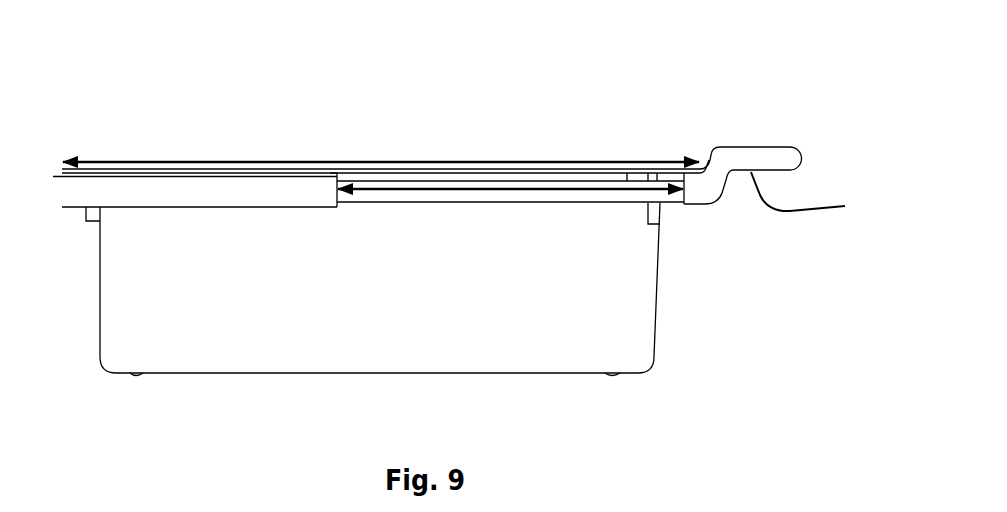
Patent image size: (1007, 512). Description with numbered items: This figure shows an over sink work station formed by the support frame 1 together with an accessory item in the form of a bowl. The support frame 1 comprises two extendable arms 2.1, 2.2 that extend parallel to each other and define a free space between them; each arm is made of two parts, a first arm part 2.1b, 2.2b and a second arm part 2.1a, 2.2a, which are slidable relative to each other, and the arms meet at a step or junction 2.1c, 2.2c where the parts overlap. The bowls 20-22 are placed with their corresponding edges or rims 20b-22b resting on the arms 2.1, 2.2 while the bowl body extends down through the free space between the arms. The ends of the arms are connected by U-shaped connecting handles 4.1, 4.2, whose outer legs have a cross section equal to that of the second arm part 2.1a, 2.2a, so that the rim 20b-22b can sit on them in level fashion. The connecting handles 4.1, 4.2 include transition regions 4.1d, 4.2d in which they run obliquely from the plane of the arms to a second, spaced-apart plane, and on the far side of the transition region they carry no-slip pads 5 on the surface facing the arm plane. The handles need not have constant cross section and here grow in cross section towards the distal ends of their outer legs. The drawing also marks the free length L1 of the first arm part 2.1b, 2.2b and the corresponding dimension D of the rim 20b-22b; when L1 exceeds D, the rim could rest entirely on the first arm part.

The support frame 1 is at (434, 323).
The extendable arm 2.1 is at (361, 323).
The extendable arm 2.2 is at (282, 212).
The second arm part 2.1a is at (195, 113).
The second arm part 2.2a is at (203, 188).
The first arm part 2.1b is at (510, 108).
The first arm part 2.2b is at (418, 182).
The lid step 2.1c is at (502, 244).
The lid step 2.2c is at (336, 205).
The bowls 20-22 is at (421, 167).
The rims 20b-22b is at (336, 170).
The connecting handle 4.1 is at (782, 201).
The connecting handle 4.2 is at (782, 201).
The transition region 4.1d is at (705, 96).
The transition region 4.2d is at (712, 180).
The no-slip pad 5 is at (805, 194).
The dimension of rim D is at (108, 161).
The free length of first arm part L1 is at (516, 190).